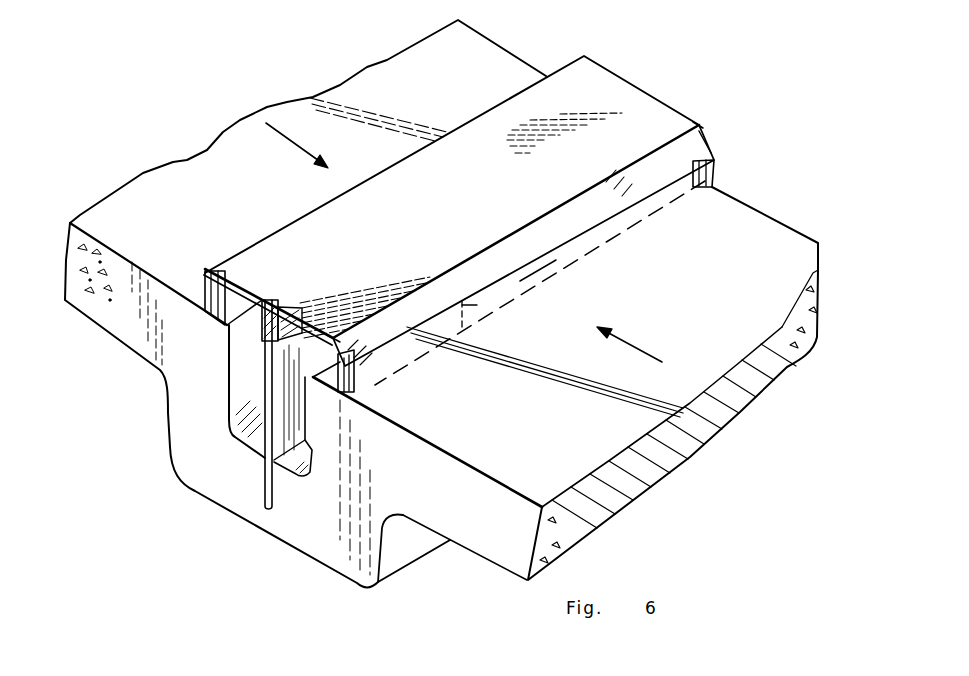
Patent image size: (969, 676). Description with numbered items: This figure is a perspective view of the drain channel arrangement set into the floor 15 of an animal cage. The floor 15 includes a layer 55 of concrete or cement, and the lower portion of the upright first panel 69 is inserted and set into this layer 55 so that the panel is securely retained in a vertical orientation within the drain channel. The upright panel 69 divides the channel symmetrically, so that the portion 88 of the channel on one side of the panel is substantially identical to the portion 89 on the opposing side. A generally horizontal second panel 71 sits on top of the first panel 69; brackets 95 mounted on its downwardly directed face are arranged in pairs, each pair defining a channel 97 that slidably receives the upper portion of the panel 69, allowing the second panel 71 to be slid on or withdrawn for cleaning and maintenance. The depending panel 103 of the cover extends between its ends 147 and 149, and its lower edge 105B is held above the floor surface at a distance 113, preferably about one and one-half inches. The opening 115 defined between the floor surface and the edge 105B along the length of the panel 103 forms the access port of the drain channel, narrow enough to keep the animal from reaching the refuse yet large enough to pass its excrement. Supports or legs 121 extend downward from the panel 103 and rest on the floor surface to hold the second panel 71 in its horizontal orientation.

The floor 15 is at (146, 228).
The layer 55 is at (449, 494).
The first panel 69 is at (318, 362).
The second panel 71 is at (440, 214).
The portion of the channel 88 is at (243, 380).
The portion of the channel 89 is at (310, 447).
The brackets 95 is at (292, 315).
The channel 97 is at (263, 332).
The panel 103 is at (703, 147).
The edge 105B is at (630, 213).
The distance 113 is at (465, 306).
The opening 115 is at (537, 268).
The supports 121 is at (712, 165).
The end of the panel 147 is at (338, 333).
The end of the panel 149 is at (700, 125).